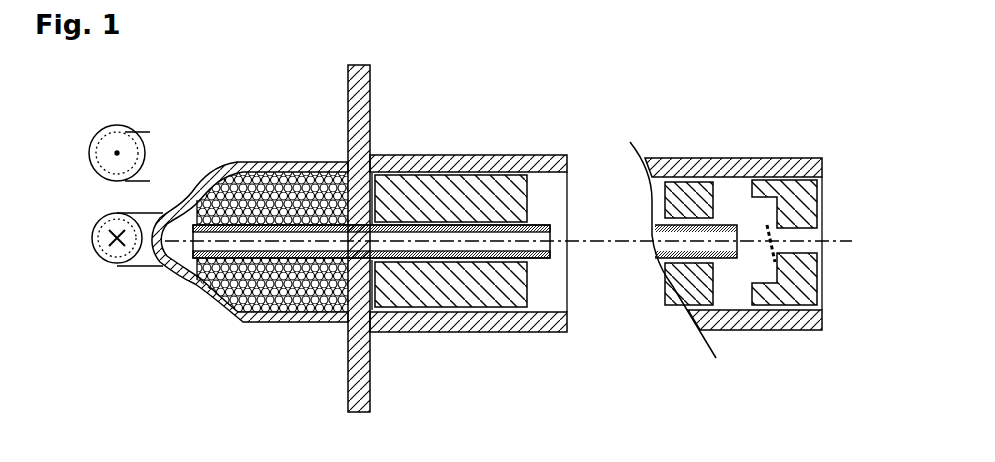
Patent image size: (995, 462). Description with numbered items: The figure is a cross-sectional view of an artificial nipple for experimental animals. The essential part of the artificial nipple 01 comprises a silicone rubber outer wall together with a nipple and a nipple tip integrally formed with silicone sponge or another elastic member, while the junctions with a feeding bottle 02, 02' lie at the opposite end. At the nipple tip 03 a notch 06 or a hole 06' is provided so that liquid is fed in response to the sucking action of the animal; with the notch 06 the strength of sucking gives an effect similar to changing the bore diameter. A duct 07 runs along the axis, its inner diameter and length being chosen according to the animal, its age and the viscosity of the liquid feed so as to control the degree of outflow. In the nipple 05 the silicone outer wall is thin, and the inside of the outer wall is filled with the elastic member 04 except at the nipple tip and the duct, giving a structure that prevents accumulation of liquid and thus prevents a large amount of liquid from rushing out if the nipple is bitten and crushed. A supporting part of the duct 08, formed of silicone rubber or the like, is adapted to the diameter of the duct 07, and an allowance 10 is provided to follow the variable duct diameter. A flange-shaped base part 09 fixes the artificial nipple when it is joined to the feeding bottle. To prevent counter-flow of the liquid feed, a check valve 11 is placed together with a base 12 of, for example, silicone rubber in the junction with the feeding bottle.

The essential part of the artificial nipple 01 is at (254, 416).
The junction with a feeding bottle 02 is at (482, 419).
The junction with a feeding bottle 02' is at (753, 421).
The nipple tip 03 is at (149, 314).
The elastic member 04 is at (287, 287).
The nipple 05 is at (228, 160).
The notch 06 is at (110, 253).
The hole 06' is at (103, 167).
The duct 07 is at (548, 223).
The supporting part of the duct 08 is at (437, 197).
The flange-shaped base part 09 is at (348, 110).
The allowance 10 is at (377, 293).
The check valve 11 is at (770, 252).
The base 12 is at (812, 285).